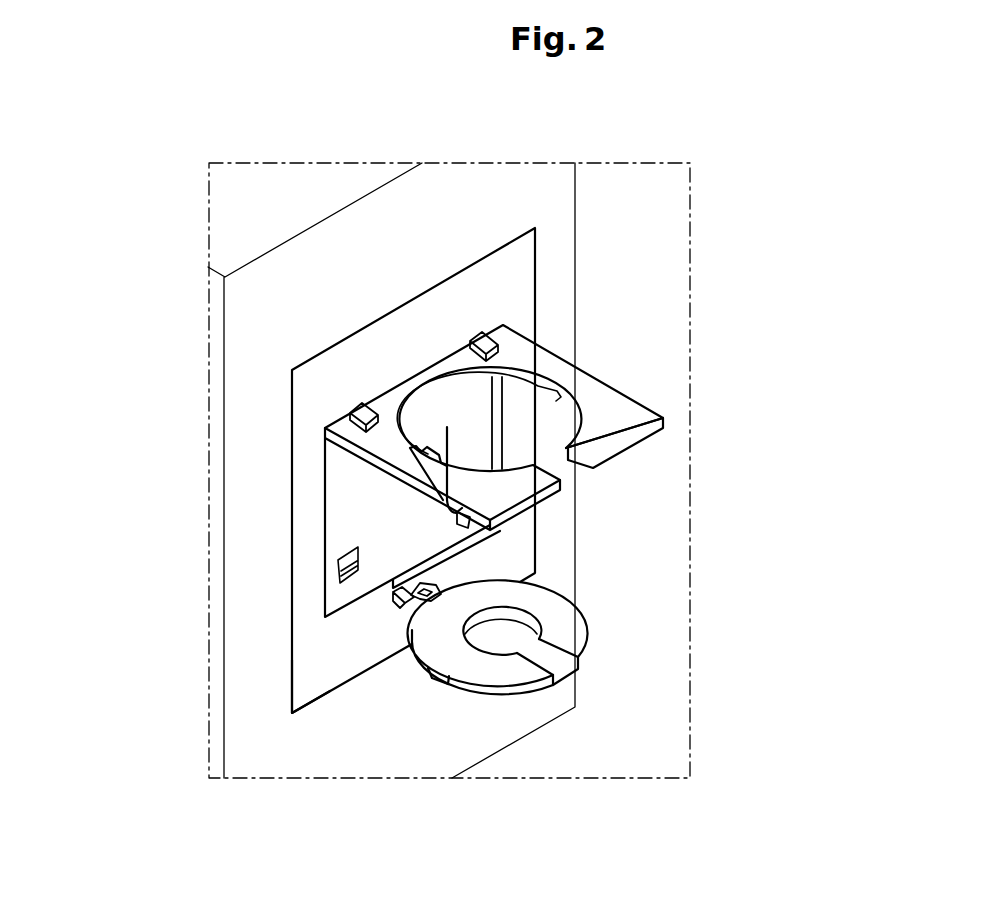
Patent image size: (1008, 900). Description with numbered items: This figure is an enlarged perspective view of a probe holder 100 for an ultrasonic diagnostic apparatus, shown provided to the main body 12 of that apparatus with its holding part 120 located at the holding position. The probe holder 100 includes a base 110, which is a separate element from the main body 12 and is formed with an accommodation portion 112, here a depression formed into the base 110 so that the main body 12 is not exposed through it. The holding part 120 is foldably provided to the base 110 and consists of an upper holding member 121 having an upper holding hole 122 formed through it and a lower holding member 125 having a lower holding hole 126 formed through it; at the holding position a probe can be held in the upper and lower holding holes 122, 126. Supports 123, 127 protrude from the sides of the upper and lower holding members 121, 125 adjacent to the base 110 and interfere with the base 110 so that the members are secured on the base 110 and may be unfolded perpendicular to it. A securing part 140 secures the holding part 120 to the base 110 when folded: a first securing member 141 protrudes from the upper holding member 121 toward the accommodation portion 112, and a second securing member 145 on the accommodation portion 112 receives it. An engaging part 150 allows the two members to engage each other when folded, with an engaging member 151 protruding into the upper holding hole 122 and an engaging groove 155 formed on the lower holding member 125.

The main body 12 is at (378, 240).
The probe holder 100 is at (537, 265).
The base 110 is at (304, 545).
The accommodation portion 112 is at (330, 597).
The holding part 120 is at (711, 484).
The upper holding member 121 is at (605, 433).
The upper holding hole 122 is at (522, 427).
The support 123 is at (497, 341).
The lower holding member 125 is at (553, 608).
The lower holding hole 126 is at (498, 643).
The support 127 is at (440, 588).
The securing part 140 is at (118, 367).
The first securing member 141 is at (422, 382).
The second securing member 145 is at (345, 548).
The engaging part 150 is at (440, 852).
The engaging member 151 is at (410, 448).
The engaging groove 155 is at (447, 672).